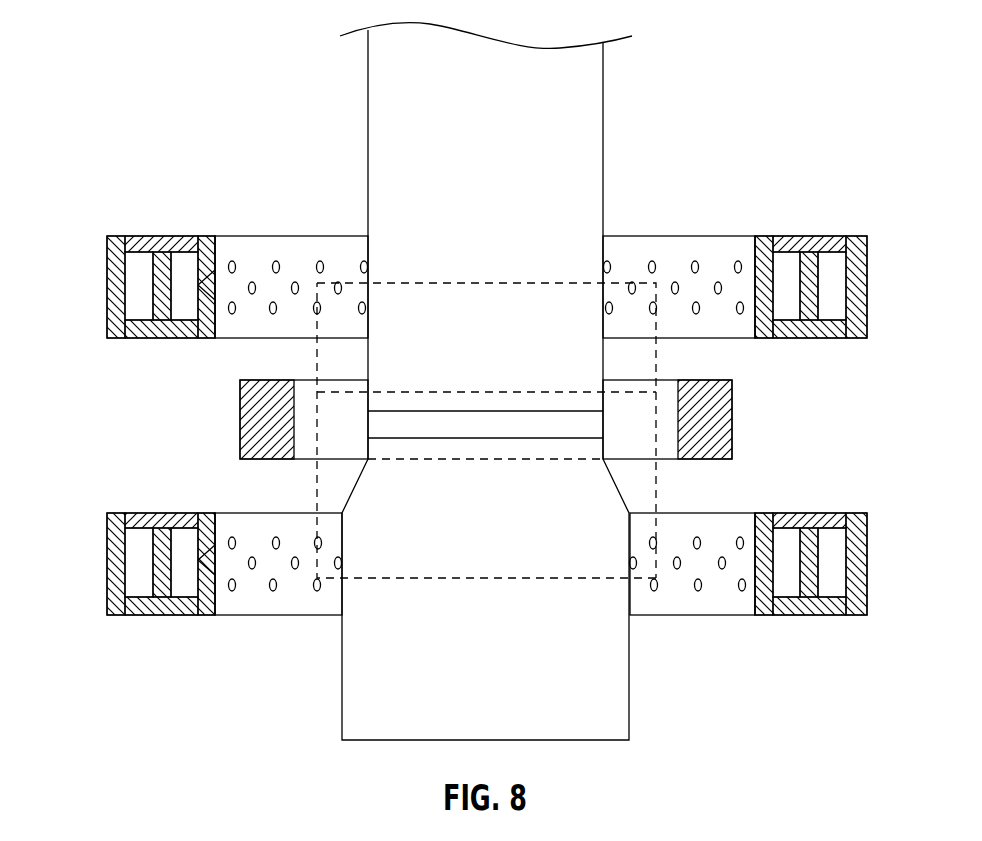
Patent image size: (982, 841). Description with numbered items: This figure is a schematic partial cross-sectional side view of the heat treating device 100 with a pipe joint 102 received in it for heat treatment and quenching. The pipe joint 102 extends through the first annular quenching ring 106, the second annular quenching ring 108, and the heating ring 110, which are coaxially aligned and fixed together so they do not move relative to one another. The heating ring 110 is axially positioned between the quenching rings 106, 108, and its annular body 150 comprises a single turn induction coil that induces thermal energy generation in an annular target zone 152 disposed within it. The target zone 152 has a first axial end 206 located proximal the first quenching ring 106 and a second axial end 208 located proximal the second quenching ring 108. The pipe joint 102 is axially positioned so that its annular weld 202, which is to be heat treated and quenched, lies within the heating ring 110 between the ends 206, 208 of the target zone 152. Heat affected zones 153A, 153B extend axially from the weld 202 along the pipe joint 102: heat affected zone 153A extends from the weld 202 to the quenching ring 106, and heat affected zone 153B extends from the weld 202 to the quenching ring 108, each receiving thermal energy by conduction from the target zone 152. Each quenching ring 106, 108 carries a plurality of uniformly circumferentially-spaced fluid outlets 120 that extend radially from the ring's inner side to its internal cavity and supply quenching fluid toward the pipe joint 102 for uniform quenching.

The heat treating device 100 is at (200, 24).
The pipe joint 102 is at (593, 102).
The first annular quenching ring 106 is at (260, 236).
The second annular quenching ring 108 is at (107, 560).
The heating ring 110 is at (243, 427).
The fluid outlets 120 is at (693, 262).
The annular body 150 is at (722, 425).
The annular target zone 152 is at (420, 390).
The heat affected zone 153A is at (537, 280).
The heat affected zone 153B is at (542, 583).
The weld 202 is at (497, 410).
The first axial end 206 is at (575, 392).
The second axial end 208 is at (502, 462).